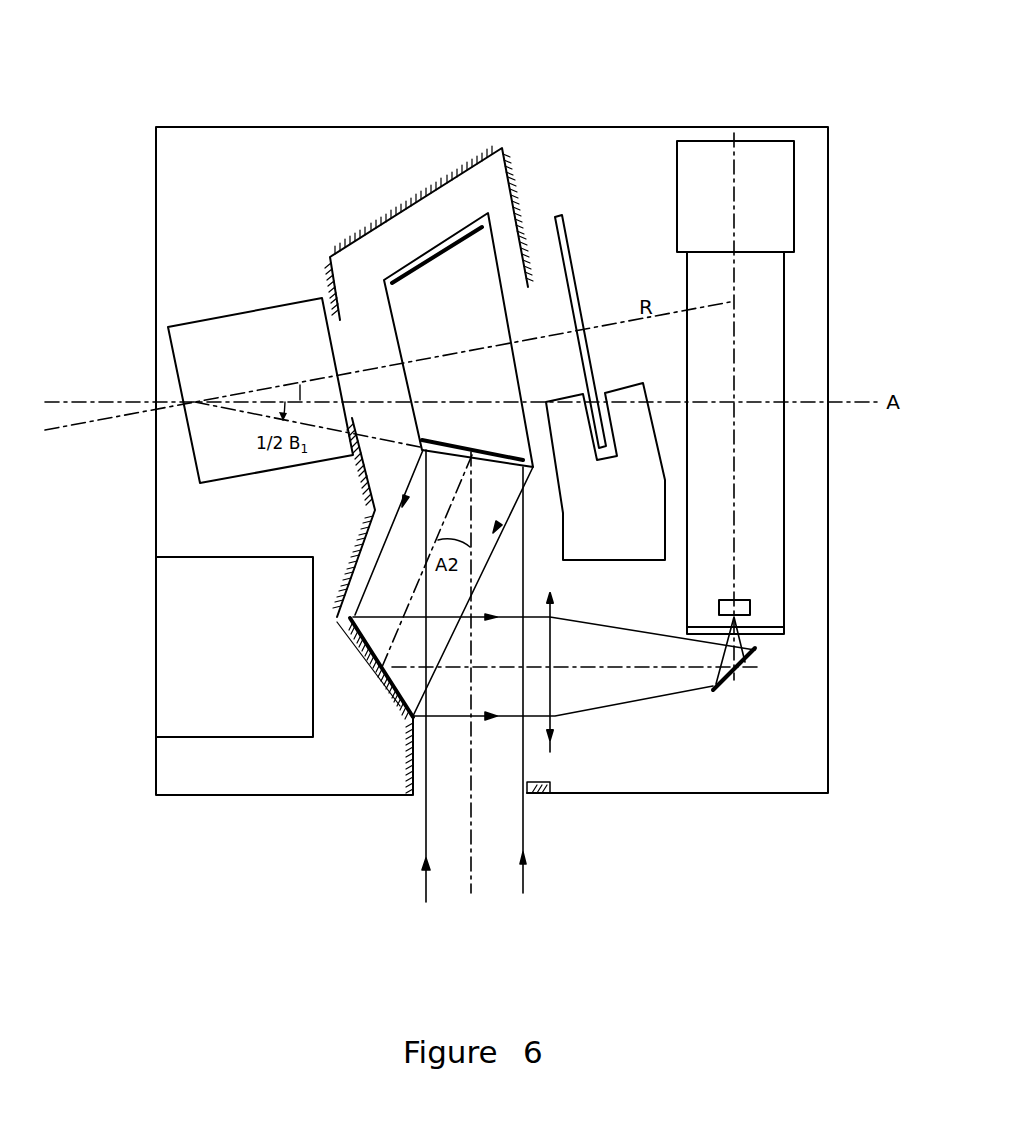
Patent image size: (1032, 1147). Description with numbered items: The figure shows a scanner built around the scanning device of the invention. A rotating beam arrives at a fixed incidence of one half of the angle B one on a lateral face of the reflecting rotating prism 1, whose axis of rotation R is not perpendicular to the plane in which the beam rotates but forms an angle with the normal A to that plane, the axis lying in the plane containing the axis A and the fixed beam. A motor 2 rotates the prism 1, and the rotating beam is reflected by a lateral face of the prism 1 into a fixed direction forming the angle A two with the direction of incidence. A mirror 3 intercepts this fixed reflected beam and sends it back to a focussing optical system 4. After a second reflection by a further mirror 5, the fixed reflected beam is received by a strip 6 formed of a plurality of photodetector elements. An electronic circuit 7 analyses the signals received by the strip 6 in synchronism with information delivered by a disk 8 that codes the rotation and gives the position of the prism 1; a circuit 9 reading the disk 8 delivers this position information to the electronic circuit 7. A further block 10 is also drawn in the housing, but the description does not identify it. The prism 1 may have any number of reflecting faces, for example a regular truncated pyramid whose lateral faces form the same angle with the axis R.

The reflecting rotating prism 1 is at (455, 253).
The motor 2 is at (203, 356).
The mirror 3 is at (416, 717).
The focussing optical system 4 is at (554, 714).
The mirror 5 is at (745, 676).
The strip of photodetector elements 6 is at (752, 608).
The electronic circuit 7 is at (778, 193).
The disk 8 is at (562, 208).
The circuit reading the disk 9 is at (642, 525).
The electronics unit 10 is at (192, 655).